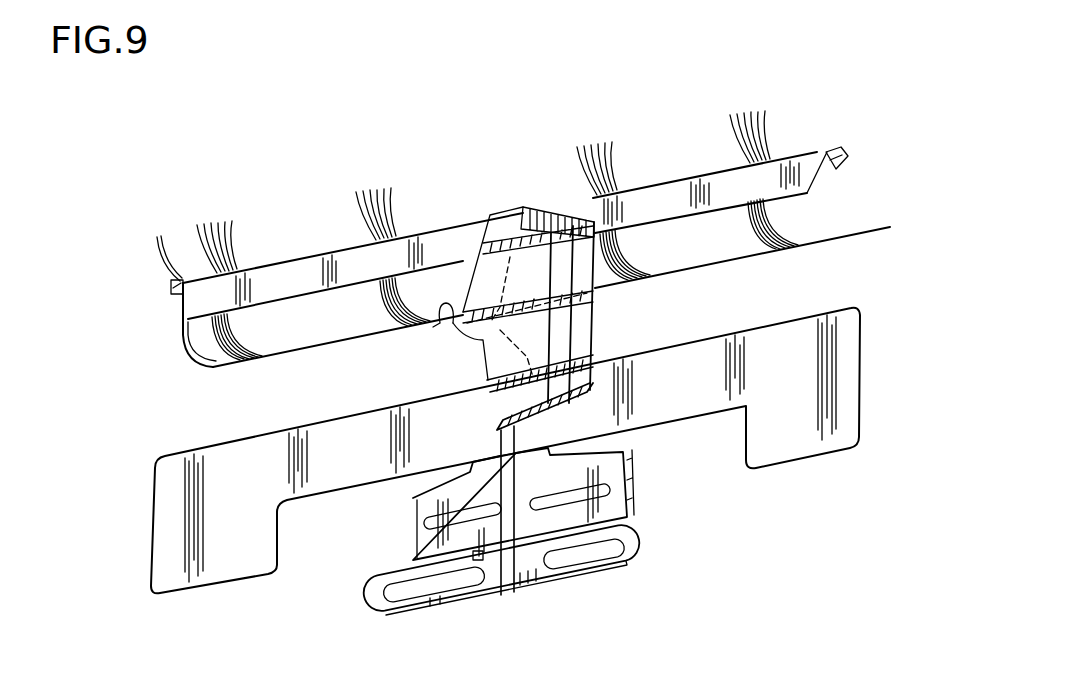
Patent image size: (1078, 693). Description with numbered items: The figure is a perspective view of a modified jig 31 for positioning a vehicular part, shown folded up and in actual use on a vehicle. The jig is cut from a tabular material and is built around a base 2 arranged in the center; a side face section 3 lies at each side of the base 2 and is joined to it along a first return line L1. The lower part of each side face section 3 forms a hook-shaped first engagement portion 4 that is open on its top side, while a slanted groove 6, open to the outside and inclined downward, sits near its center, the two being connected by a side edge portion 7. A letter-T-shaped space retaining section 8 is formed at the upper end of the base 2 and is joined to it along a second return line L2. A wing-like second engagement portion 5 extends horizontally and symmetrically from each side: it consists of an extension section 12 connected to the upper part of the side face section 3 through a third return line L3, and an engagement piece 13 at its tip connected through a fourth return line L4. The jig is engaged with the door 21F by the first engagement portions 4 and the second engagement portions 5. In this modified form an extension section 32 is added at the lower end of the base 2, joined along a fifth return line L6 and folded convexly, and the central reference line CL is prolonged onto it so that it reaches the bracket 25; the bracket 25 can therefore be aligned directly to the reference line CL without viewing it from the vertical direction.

The base 2 is at (575, 335).
The side face section 3 is at (483, 340).
The first engagement portion 4 is at (440, 326).
The second engagement portion 5 is at (837, 187).
The slanted groove 6 is at (425, 268).
The side edge portion 7 is at (437, 306).
The space retaining section 8 is at (529, 244).
The extension section 12 is at (657, 200).
The engagement piece 13 is at (845, 155).
The plate 21F is at (763, 253).
The bracket 25 is at (790, 400).
The jig 31 is at (275, 240).
The extension section 32 is at (607, 466).
The first return line L1 is at (597, 290).
The second return line L2 is at (583, 222).
The third return line L3 is at (473, 237).
The fourth return line L4 is at (177, 292).
The fifth return line L6 is at (575, 398).
The reference line CL is at (560, 380).